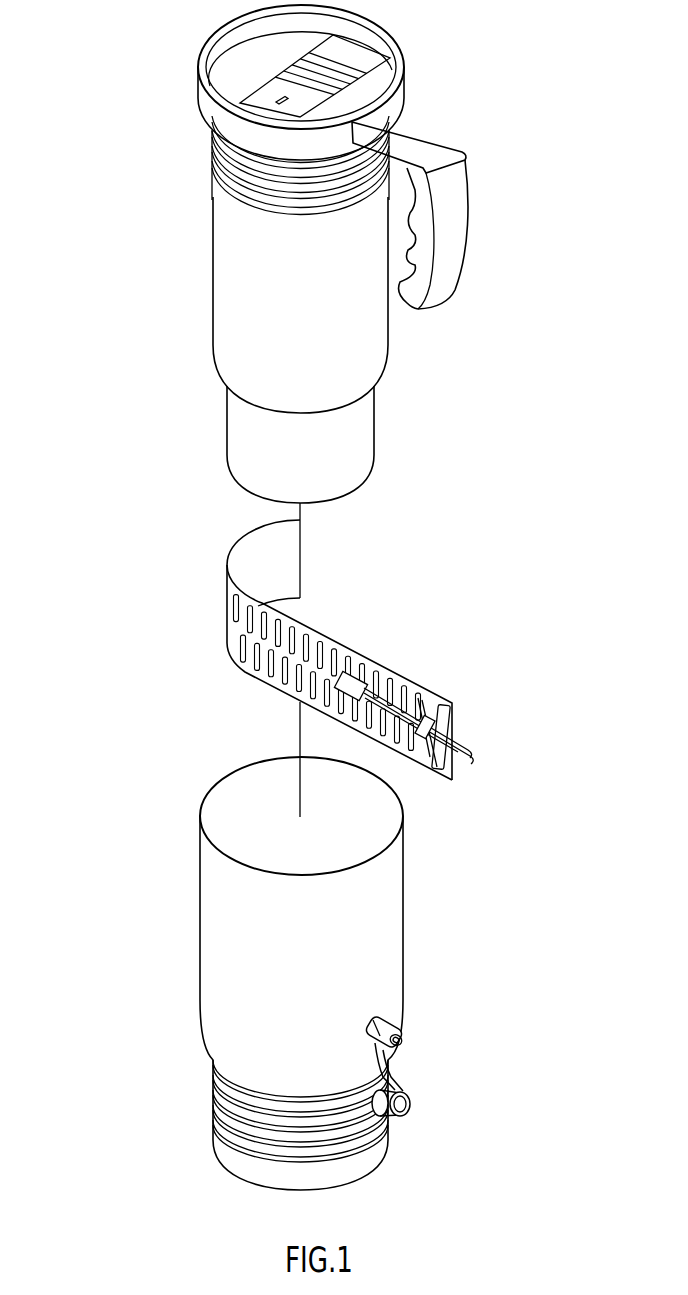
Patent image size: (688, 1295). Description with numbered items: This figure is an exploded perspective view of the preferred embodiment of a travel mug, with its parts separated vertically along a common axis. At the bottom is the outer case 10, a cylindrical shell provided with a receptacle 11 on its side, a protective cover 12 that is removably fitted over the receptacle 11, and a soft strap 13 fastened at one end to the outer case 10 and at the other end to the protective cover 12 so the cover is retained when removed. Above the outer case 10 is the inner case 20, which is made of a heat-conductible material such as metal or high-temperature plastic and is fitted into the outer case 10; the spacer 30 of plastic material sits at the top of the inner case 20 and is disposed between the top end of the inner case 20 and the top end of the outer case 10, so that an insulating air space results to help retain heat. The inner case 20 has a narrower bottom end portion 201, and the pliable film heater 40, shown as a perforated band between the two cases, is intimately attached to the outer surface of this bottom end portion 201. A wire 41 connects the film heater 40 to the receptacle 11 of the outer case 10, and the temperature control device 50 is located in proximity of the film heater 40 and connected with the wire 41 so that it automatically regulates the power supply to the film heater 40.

The outer case 10 is at (393, 902).
The receptacle 11 is at (393, 1010).
The protective cover 12 is at (392, 1123).
The soft strap 13 is at (393, 1065).
The inner case 20 is at (380, 347).
The bottom end portion 201 is at (355, 440).
The spacer 30 is at (215, 112).
The pliable film heater 40 is at (318, 628).
The wire 41 is at (466, 740).
The temperature control device 50 is at (350, 683).